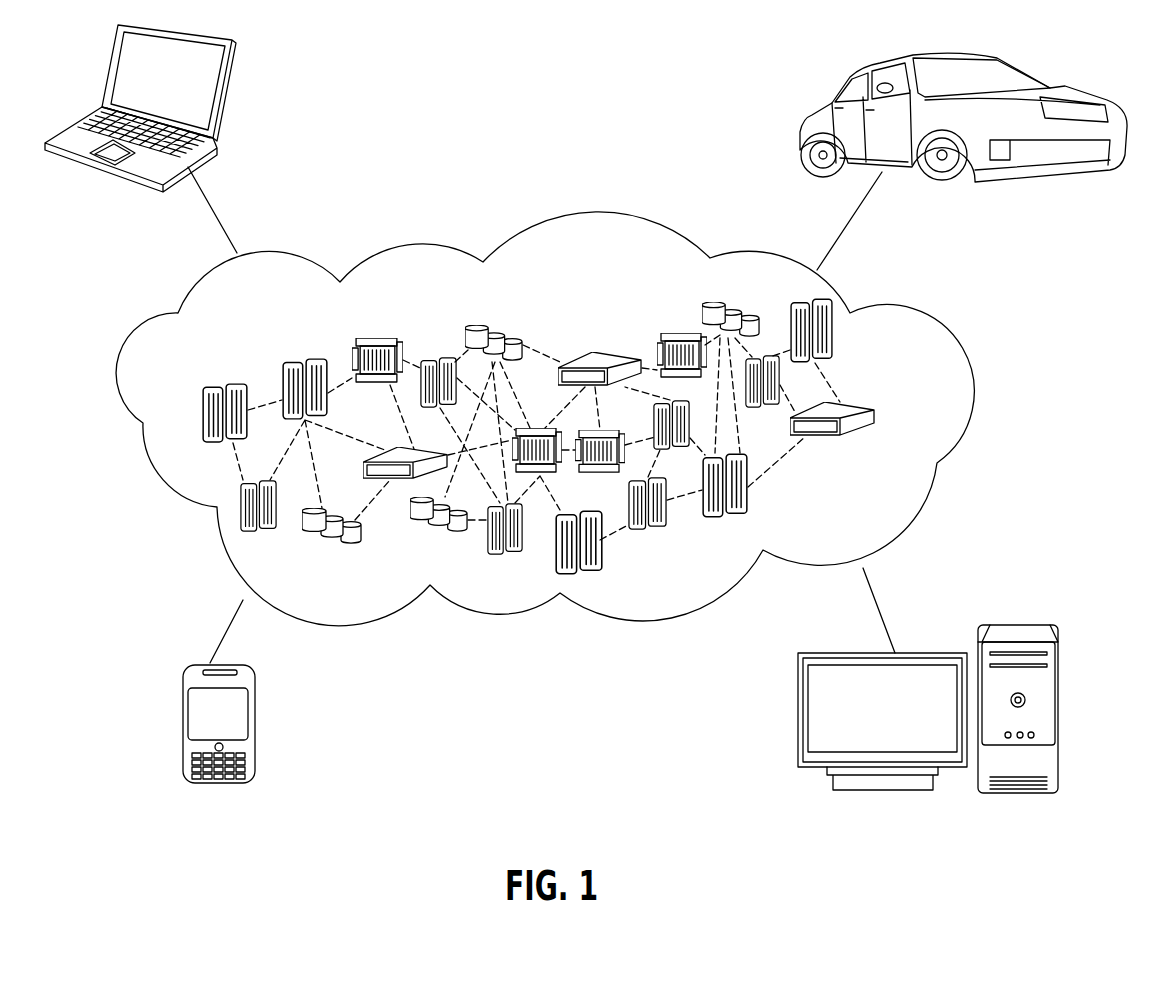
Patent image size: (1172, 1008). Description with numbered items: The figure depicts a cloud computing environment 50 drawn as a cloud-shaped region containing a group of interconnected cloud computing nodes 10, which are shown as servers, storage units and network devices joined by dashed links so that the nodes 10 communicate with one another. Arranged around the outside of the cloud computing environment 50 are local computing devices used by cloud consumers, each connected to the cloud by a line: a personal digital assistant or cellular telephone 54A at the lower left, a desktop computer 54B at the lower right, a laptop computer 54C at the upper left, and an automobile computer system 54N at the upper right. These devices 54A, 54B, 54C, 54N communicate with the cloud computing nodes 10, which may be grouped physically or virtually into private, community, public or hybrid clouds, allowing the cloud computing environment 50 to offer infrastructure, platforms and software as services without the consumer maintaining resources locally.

The cloud computing node 10 is at (917, 413).
The cloud computing environment 50 is at (940, 327).
The personal digital assistant (PDA) or cellular telephone 54A is at (182, 730).
The desktop computer 54B is at (1022, 625).
The laptop computer 54C is at (225, 92).
The automobile computer system 54N is at (810, 102).